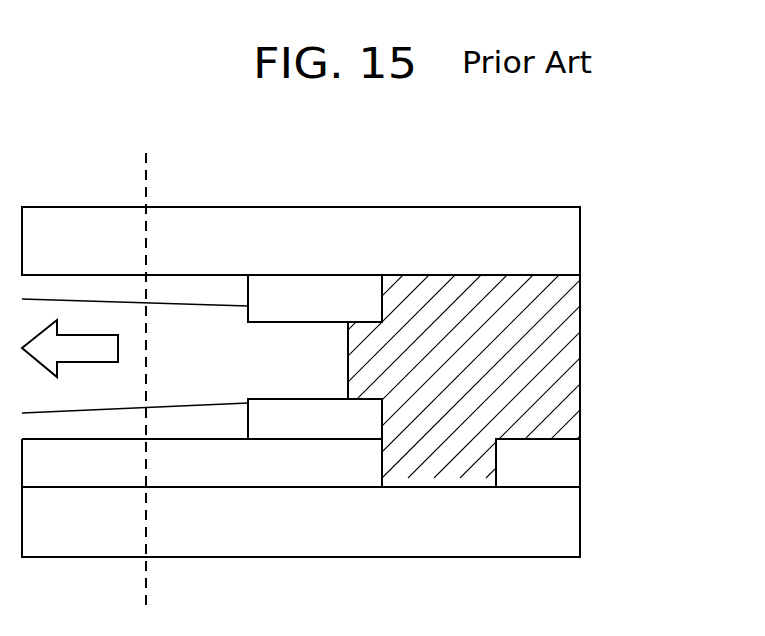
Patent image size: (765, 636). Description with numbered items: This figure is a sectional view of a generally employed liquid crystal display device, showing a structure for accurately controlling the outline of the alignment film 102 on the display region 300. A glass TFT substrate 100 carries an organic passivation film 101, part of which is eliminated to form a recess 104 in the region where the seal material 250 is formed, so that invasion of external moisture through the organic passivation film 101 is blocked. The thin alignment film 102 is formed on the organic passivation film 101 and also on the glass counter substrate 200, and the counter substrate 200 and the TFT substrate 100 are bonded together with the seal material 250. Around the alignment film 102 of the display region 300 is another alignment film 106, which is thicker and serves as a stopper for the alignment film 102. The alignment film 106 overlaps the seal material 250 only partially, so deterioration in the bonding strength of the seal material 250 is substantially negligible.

The TFT substrate 100 is at (570, 527).
The organic passivation film 101 is at (570, 475).
The alignment film 102 is at (200, 288).
The recess 104 is at (434, 446).
The alignment film 106 is at (316, 293).
The counter substrate 200 is at (570, 247).
The seal material 250 is at (558, 341).
The display region 300 is at (85, 363).